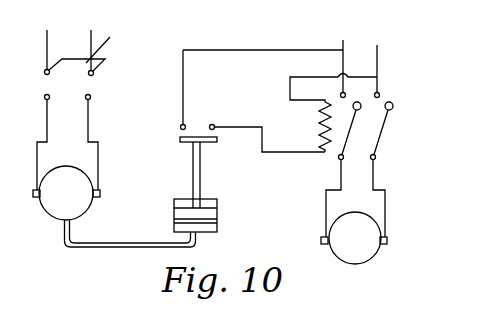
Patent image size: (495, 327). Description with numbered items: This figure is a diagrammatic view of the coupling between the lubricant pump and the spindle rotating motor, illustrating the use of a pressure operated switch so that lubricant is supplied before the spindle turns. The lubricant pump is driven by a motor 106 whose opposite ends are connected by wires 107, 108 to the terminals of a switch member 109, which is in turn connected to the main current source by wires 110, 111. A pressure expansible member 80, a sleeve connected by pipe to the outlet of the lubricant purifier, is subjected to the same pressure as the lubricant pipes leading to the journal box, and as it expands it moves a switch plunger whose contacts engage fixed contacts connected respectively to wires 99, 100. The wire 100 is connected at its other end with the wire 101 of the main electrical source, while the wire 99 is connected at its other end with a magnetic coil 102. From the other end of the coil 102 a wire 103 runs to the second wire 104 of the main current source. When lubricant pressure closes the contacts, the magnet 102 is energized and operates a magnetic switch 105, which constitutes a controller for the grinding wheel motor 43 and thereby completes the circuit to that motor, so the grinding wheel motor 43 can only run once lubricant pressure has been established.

The grinding wheel motor 43 is at (370, 258).
The pressure expansible member 80 is at (217, 229).
The wire 99 is at (238, 131).
The wire 100 is at (234, 50).
The wire of main electrical source 101 is at (343, 41).
The magnetic coil 102 is at (318, 118).
The wire 103 is at (290, 76).
The second wire of main current source 104 is at (379, 47).
The magnetic switch 105 is at (385, 100).
The motor 106 is at (74, 214).
The wire 107 is at (46, 120).
The wire 108 is at (90, 121).
The switch member 109 is at (97, 51).
The wire 110 is at (47, 31).
The wire 111 is at (91, 31).